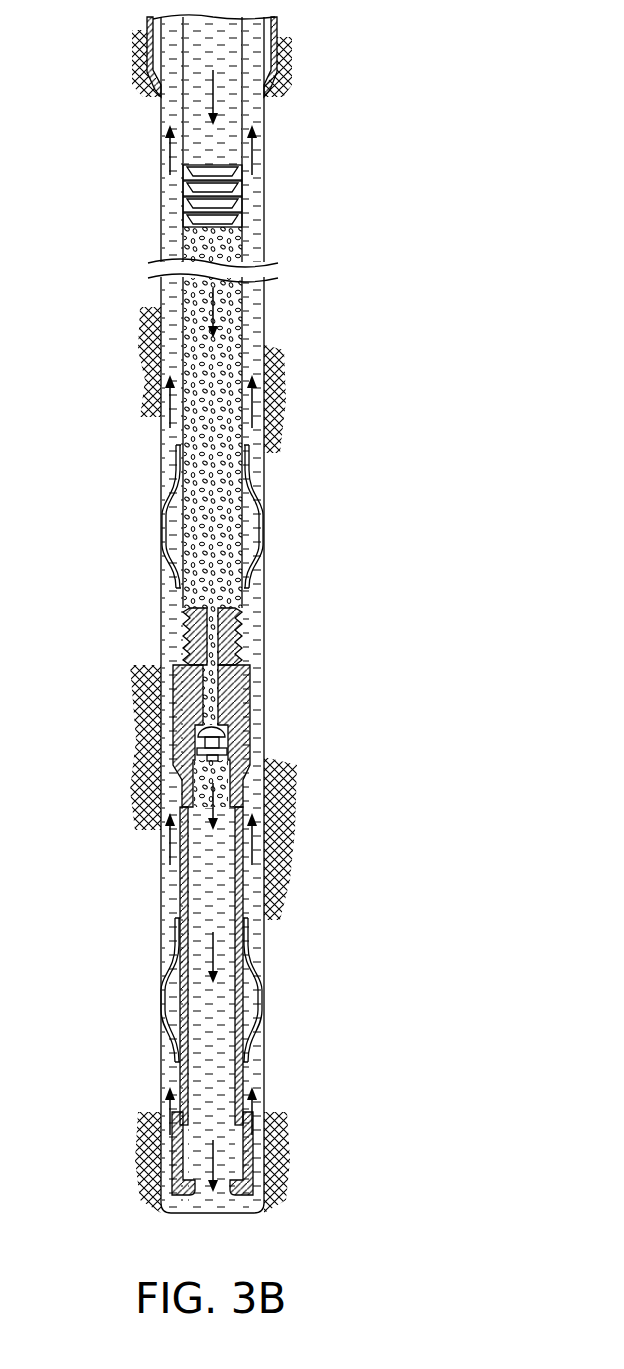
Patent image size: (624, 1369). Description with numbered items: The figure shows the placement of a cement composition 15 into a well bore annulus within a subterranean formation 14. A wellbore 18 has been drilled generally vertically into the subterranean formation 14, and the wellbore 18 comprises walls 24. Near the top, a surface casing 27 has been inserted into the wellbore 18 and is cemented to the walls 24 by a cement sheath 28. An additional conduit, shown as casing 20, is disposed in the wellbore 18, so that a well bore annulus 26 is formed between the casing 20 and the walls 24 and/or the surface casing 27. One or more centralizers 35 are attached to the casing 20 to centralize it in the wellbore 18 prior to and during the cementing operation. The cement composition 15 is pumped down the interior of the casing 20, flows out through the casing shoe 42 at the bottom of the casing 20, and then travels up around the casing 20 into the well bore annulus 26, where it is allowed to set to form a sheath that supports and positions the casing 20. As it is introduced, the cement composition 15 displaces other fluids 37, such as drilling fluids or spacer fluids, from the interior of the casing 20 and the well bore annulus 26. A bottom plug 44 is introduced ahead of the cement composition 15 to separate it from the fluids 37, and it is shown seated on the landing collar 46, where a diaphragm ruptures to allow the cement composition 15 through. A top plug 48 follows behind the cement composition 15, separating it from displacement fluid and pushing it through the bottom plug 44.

The subterranean formation 14 is at (348, 633).
The cement composition 15 is at (217, 307).
The wellbore 18 is at (278, 489).
The casing 20 is at (242, 368).
The walls 24 is at (259, 192).
The well bore annulus 26 is at (175, 435).
The surface casing 27 is at (258, 45).
The cement sheath 28 is at (277, 82).
The centralizers 35 is at (170, 957).
The fluids 37 is at (213, 803).
The casing shoe 42 is at (170, 1157).
The bottom plug 44 is at (183, 637).
The landing collar 46 is at (172, 702).
The top plug 48 is at (183, 223).